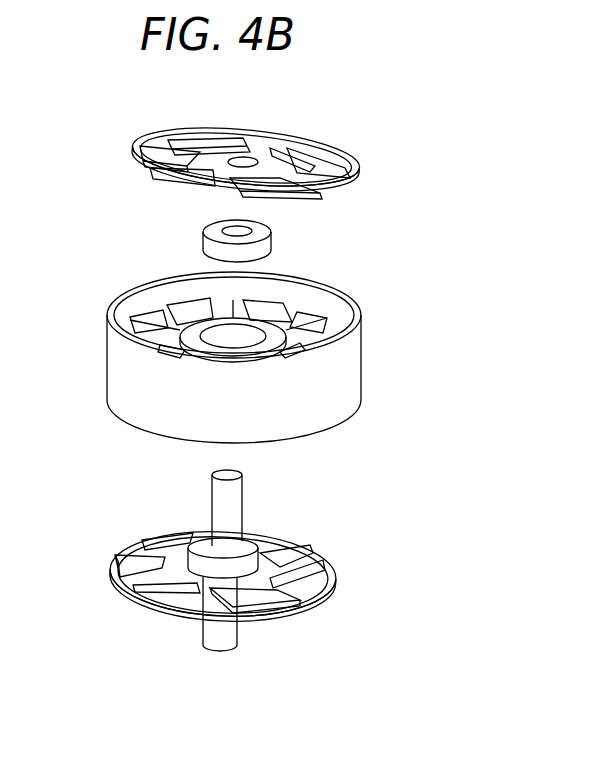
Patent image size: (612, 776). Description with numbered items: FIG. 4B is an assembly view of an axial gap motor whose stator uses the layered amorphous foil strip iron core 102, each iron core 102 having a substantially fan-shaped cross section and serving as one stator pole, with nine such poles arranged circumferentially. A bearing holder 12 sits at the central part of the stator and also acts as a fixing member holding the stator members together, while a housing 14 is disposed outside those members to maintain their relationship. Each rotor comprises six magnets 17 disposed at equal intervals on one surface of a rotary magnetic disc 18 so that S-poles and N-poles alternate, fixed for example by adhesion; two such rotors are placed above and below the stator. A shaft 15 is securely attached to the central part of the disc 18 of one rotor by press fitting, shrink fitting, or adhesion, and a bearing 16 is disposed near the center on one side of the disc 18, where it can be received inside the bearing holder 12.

The bearing holder 12 is at (295, 310).
The housing 14 is at (347, 383).
The shaft 15 is at (217, 503).
The bearing 16 is at (208, 245).
The magnet 17 is at (340, 182).
The rotary magnetic disc 18 is at (267, 133).
The iron core 102 is at (258, 310).